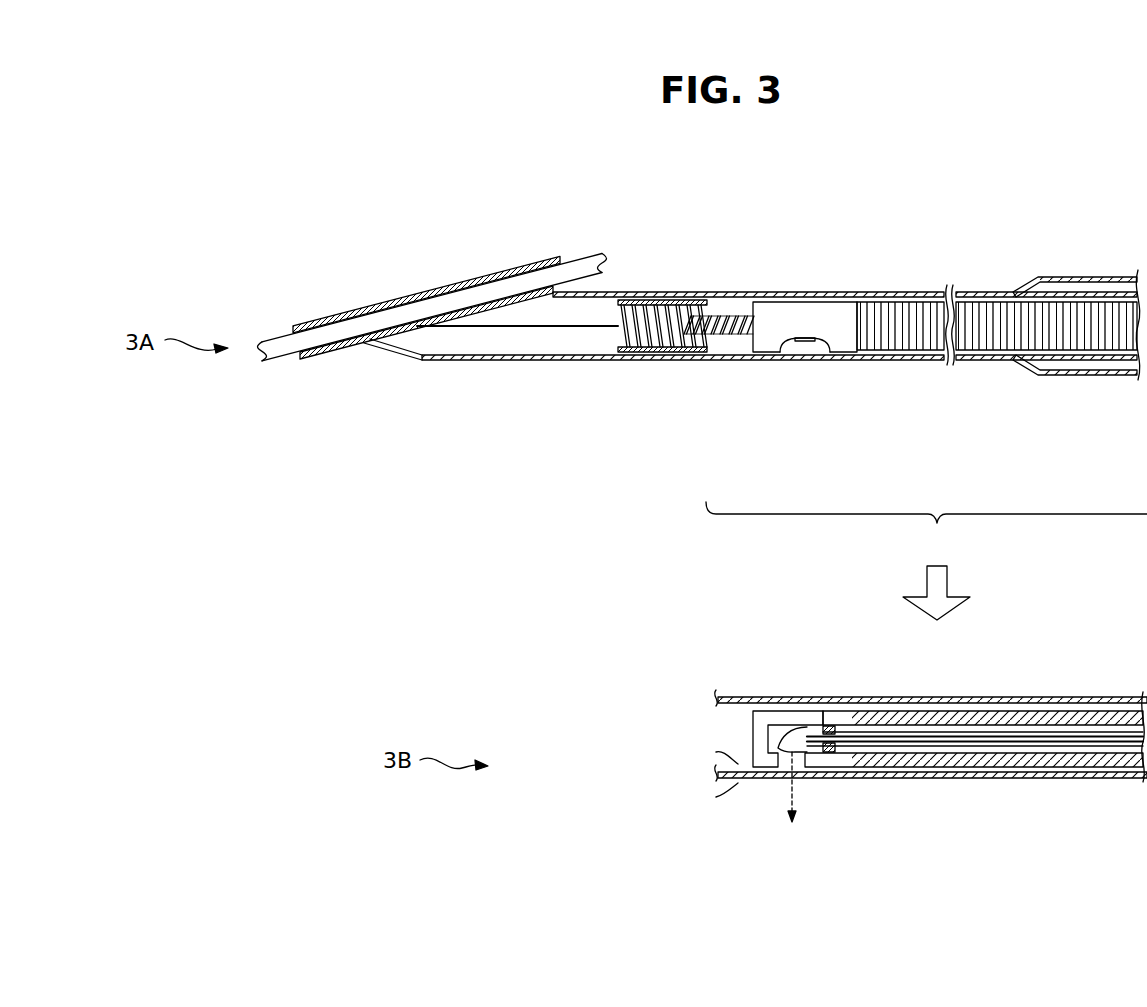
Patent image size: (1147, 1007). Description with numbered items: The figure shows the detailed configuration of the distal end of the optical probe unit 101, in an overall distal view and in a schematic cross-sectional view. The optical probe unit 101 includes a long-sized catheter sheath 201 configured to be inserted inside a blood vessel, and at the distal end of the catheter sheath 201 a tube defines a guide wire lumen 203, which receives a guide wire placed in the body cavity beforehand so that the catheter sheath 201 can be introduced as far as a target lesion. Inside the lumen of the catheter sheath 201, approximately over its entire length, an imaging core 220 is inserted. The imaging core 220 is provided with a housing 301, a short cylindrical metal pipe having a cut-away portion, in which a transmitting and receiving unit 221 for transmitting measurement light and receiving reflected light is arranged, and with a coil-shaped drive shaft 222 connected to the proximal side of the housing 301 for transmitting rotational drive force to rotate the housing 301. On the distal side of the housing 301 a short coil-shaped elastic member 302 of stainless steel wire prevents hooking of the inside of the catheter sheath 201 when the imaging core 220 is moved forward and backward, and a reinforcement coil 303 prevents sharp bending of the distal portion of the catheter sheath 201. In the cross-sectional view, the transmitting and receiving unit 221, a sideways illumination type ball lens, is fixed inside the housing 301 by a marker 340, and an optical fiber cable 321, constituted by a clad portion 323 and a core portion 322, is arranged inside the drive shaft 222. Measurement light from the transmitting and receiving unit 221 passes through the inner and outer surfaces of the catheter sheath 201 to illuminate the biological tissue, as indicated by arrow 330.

The optical probe unit 101 is at (1146, 195).
The catheter sheath 201 is at (490, 363).
The guide wire lumen 203 is at (400, 297).
The imaging core 220 is at (926, 527).
The transmitting and receiving unit 221 is at (808, 348).
The drive shaft 222 is at (903, 342).
The housing 301 is at (773, 338).
The elastic member 302 is at (723, 345).
The reinforcement coil 303 is at (643, 353).
The optical fiber cable 321 is at (935, 745).
The core portion 322 is at (983, 737).
The clad portion 323 is at (1040, 745).
The arrow 330 is at (794, 800).
The marker 340 is at (838, 744).